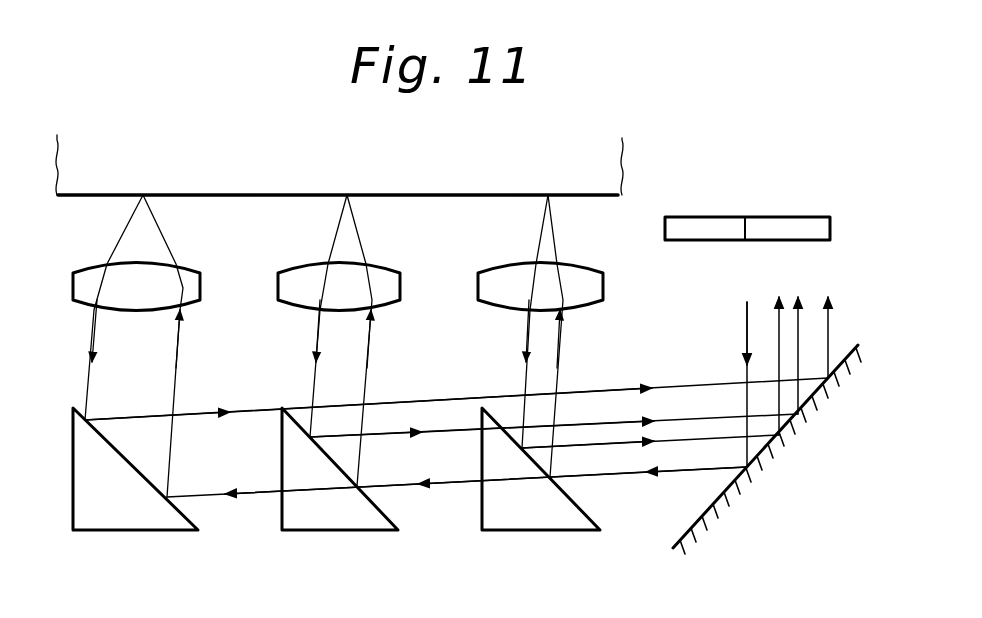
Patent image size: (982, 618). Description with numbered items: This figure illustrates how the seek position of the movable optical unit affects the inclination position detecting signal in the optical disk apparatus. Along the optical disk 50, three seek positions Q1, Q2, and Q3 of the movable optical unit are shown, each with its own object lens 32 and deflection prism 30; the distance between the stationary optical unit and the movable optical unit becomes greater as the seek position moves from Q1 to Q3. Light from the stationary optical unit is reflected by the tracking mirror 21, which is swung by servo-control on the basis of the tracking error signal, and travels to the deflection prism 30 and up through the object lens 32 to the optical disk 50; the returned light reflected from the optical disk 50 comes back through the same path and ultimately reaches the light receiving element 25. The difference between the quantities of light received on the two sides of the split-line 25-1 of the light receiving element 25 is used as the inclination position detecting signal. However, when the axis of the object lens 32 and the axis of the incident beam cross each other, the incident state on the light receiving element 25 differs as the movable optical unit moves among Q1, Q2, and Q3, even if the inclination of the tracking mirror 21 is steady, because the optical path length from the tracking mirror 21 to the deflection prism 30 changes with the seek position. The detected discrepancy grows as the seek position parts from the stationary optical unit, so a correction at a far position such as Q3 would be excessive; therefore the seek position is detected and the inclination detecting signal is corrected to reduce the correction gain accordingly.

The optical disk 50 is at (276, 184).
The object lens 32 is at (190, 285).
The deflection prism 30 is at (163, 520).
The light receiving element 25 is at (816, 211).
The split-line 25-1 is at (746, 216).
The tracking mirror 21 is at (703, 512).
The seek position Q1 is at (548, 190).
The seek position Q2 is at (349, 190).
The seek position Q3 is at (145, 190).